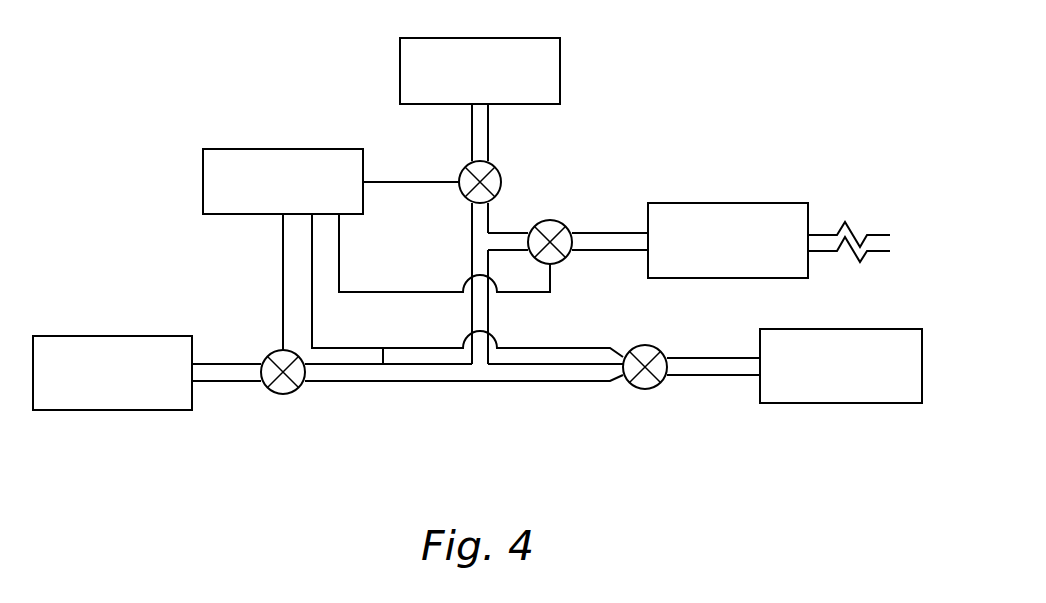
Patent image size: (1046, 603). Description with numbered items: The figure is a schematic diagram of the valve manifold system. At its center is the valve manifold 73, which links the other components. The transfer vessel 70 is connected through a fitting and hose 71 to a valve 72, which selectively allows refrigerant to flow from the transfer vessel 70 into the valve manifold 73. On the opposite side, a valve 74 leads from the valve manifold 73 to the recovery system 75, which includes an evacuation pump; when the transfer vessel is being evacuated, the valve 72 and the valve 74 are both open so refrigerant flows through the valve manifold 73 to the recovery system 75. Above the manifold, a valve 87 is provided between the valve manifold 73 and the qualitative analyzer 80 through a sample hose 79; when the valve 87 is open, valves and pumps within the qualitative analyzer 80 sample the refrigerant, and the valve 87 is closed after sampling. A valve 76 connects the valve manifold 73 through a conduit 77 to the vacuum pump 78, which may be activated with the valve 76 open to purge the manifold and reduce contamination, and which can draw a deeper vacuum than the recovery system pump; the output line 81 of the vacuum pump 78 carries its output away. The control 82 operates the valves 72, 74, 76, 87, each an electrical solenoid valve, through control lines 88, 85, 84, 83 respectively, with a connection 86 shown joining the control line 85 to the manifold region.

The transfer vessel 70 is at (128, 410).
The fitting and hose 71 is at (218, 382).
The valve 72 is at (293, 393).
The valve manifold 73 is at (425, 383).
The valve 74 is at (650, 390).
The recovery system 75 is at (855, 329).
The valve 76 is at (560, 262).
The conduit 77 is at (608, 251).
The vacuum pump 78 is at (712, 203).
The sample hose 79 is at (488, 147).
The qualitative analyzer 80 is at (560, 80).
The vacuum pump exhaust line 81 is at (822, 235).
The control 82 is at (363, 200).
The control line 83 is at (393, 182).
The control line 84 is at (410, 292).
The control line 85 is at (342, 347).
The control line connection 86 is at (383, 347).
The valve 87 is at (501, 178).
The control line 88 is at (283, 298).